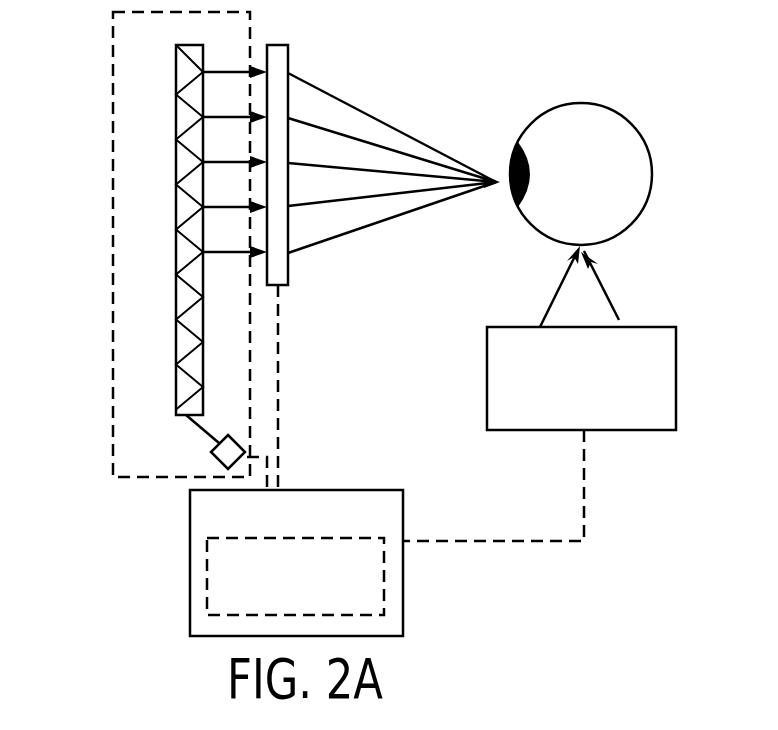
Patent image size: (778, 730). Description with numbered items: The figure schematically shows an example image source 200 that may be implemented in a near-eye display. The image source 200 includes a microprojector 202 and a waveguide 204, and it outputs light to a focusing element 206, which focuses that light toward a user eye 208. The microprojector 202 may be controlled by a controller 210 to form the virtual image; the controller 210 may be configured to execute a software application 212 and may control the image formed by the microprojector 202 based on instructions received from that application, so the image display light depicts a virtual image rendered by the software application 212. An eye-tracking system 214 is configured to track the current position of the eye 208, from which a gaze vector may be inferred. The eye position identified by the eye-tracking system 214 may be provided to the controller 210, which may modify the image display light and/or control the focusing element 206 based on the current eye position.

The image source 200 is at (112, 50).
The microprojector 202 is at (210, 455).
The waveguide 204 is at (176, 76).
The focusing element 206 is at (289, 62).
The user eye 208 is at (612, 111).
The controller 210 is at (396, 521).
The software application 212 is at (386, 580).
The eye-tracking system 214 is at (637, 404).